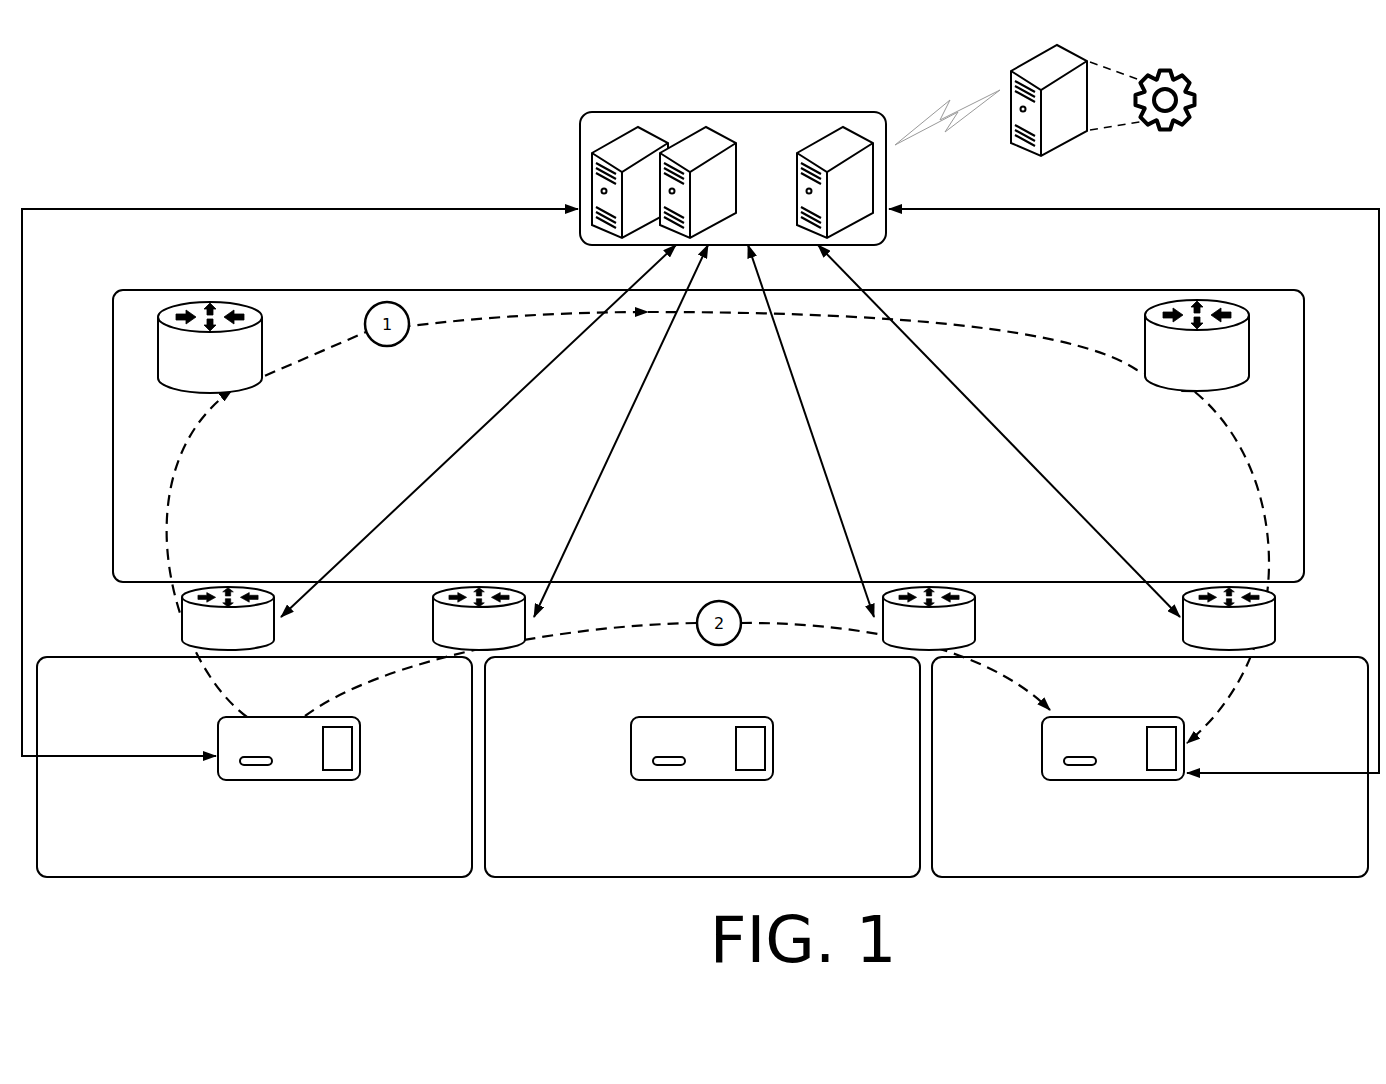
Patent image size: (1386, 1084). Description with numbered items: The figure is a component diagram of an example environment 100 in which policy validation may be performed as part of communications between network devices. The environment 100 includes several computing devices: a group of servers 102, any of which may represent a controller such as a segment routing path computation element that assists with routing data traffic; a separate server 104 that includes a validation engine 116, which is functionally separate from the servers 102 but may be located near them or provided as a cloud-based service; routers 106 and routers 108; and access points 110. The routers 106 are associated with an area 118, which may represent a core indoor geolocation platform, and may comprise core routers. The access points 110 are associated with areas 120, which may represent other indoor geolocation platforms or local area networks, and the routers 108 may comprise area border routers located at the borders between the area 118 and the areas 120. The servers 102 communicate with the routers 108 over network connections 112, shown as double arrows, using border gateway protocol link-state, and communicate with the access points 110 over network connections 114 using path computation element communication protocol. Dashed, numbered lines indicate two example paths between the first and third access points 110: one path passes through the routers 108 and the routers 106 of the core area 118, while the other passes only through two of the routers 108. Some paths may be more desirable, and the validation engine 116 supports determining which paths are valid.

The environment 100 is at (260, 76).
The servers 102 is at (733, 178).
The server 104 is at (991, 100).
The routers 106 is at (703, 346).
The routers 108 is at (728, 618).
The access points 110 is at (701, 748).
The network connections 112 is at (730, 431).
The network connections 114 is at (700, 491).
The validation engine 116 is at (1194, 88).
The area 118 is at (232, 287).
The areas 120 is at (702, 767).